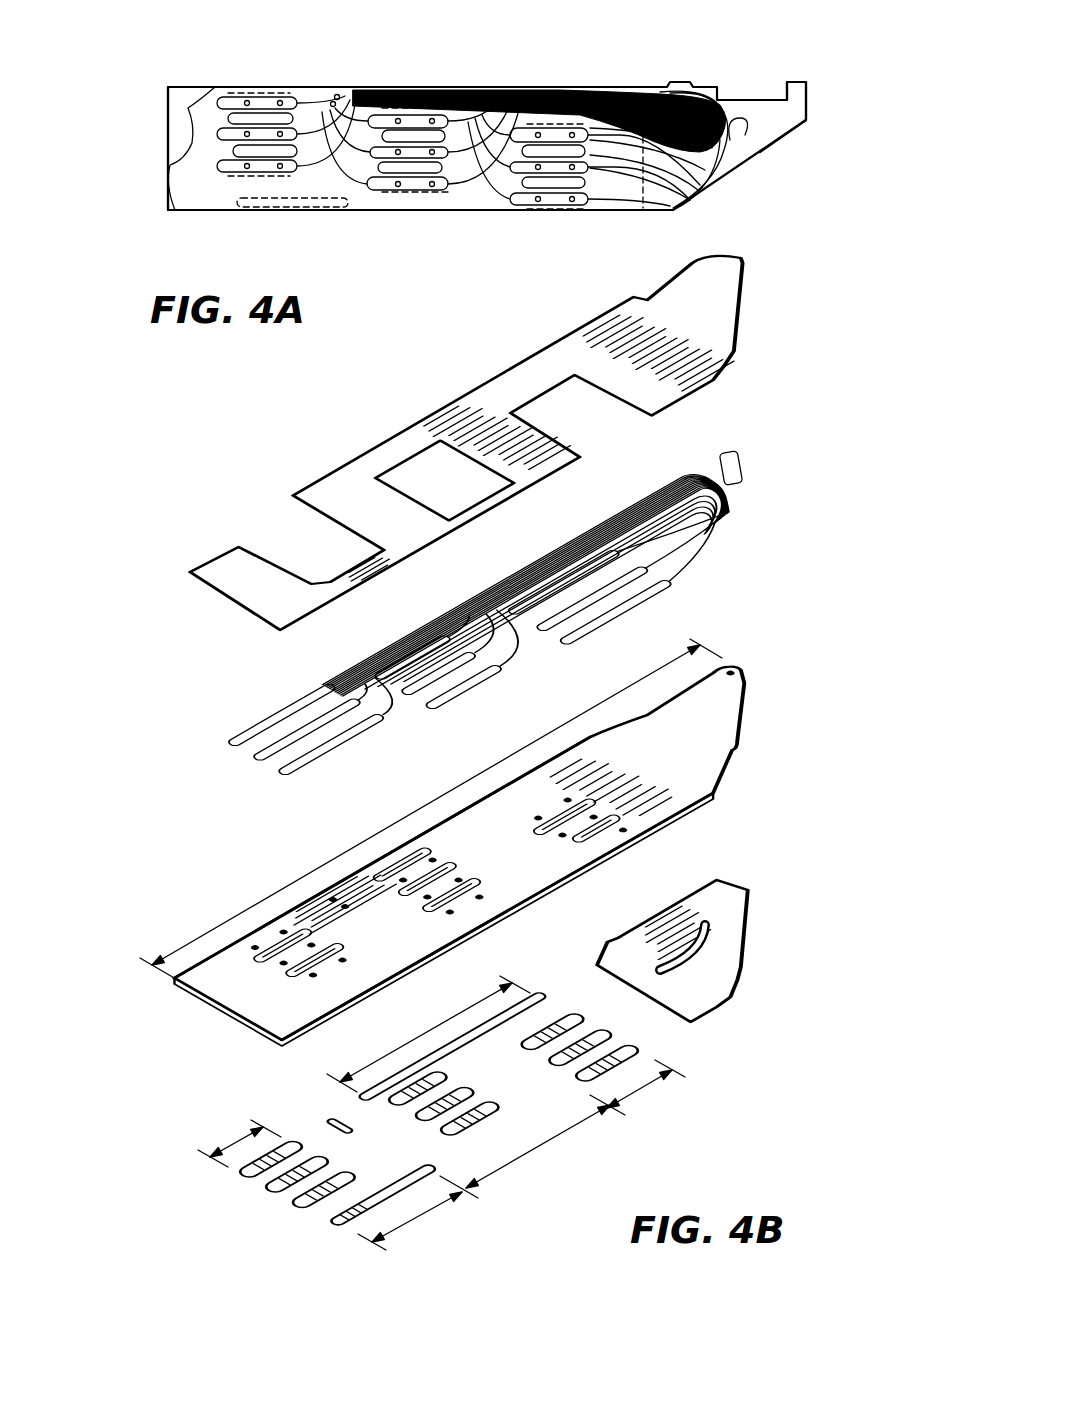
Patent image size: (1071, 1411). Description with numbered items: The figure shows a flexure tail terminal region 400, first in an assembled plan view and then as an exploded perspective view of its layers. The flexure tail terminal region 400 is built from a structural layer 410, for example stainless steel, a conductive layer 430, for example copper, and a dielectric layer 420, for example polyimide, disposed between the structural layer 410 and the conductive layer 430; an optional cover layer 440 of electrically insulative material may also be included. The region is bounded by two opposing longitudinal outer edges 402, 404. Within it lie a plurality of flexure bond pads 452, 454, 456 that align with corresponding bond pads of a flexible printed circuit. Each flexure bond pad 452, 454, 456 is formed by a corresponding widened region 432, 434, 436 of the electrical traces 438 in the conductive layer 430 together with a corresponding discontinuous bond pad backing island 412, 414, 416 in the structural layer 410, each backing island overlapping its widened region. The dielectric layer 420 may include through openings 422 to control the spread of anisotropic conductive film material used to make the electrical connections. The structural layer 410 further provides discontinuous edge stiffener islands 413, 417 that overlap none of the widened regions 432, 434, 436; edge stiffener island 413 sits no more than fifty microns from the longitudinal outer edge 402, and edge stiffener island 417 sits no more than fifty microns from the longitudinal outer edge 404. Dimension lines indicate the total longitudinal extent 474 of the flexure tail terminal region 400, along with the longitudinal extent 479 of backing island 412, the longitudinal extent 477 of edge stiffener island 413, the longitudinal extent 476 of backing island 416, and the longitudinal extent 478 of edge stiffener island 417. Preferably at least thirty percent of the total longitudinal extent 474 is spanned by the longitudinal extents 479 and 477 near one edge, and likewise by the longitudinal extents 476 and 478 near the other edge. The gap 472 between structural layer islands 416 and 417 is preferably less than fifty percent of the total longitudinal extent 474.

In FIG. 4A, the flexure tail terminal region 400 is at (140, 90).
In FIG. 4B, the flexure tail terminal region 400 is at (98, 1235).
In FIG. 4A, the longitudinal outer edge 402 is at (607, 86).
In FIG. 4B, the longitudinal outer edge 402 is at (450, 818).
In FIG. 4A, the longitudinal outer edge 404 is at (403, 211).
In FIG. 4B, the longitudinal outer edge 404 is at (588, 862).
In FIG. 4A, the structural layer 410 is at (793, 100).
In FIG. 4B, the structural layer 410 is at (710, 987).
In FIG. 4B, the discontinuous bond pad backing island 412 is at (248, 1178).
In FIG. 4B, the discontinuous edge stiffener island 413 is at (375, 1136).
In FIG. 4B, the discontinuous bond pad backing island 414 is at (518, 1062).
In FIG. 4B, the discontinuous bond pad backing island 416 is at (640, 1037).
In FIG. 4A, the discontinuous edge stiffener island 417 is at (297, 215).
In FIG. 4B, the discontinuous edge stiffener island 417 is at (333, 1226).
In FIG. 4B, the dielectric layer 420 is at (738, 727).
In FIG. 4B, the through openings 422 is at (283, 979).
In FIG. 4B, the conductive layer 430 is at (742, 508).
In FIG. 4B, the widened region 432 is at (270, 723).
In FIG. 4B, the widened region 434 is at (525, 640).
In FIG. 4B, the widened region 436 is at (641, 604).
In FIG. 4B, the electrical traces 438 is at (635, 497).
In FIG. 4A, the cover layer 440 is at (188, 100).
In FIG. 4B, the cover layer 440 is at (722, 318).
In FIG. 4A, the flexure bond pad 452 is at (265, 103).
In FIG. 4A, the flexure bond pad 454 is at (325, 107).
In FIG. 4A, the flexure bond pad 456 is at (553, 198).
In FIG. 4B, the gap 472 is at (541, 1146).
In FIG. 4B, the total longitudinal extent 474 is at (455, 782).
In FIG. 4B, the longitudinal extent 476 is at (643, 1089).
In FIG. 4B, the longitudinal extent 477 is at (408, 1042).
In FIG. 4B, the longitudinal extent 478 is at (422, 1217).
In FIG. 4B, the longitudinal extent 479 is at (230, 1146).